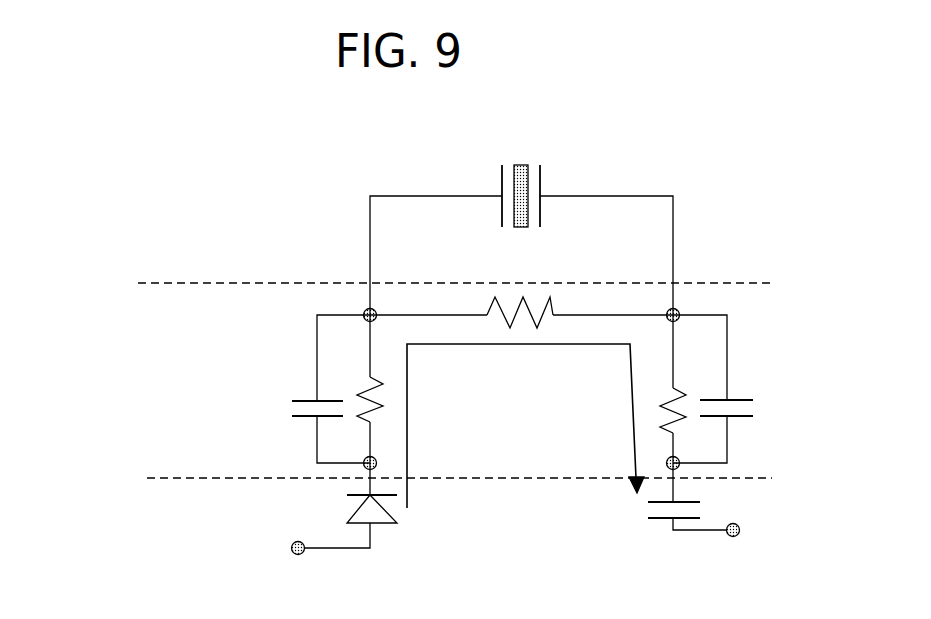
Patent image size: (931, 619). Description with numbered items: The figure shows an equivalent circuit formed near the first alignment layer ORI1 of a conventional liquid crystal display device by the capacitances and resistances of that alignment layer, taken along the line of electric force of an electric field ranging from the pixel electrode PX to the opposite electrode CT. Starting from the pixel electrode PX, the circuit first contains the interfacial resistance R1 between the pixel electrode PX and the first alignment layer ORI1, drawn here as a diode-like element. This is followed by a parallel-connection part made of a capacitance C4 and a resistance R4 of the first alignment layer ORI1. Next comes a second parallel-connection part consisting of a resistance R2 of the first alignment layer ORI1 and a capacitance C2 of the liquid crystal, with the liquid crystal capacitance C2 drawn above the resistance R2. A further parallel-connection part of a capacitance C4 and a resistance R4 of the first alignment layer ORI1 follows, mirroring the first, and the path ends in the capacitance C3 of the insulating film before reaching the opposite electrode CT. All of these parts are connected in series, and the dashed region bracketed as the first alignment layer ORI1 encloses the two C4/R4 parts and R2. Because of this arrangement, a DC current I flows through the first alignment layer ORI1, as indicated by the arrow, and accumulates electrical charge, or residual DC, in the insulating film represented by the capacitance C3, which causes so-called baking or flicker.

The first alignment layer ORI1 is at (115, 287).
The capacitance of the liquid crystal C2 is at (521, 224).
The resistance of the first alignment layer R2 is at (521, 306).
The resistance of the first alignment layer R4 is at (522, 389).
The capacitance of the first alignment layer C4 is at (525, 389).
The interfacial resistance R1 is at (351, 505).
The capacitance of the insulating film C3 is at (694, 496).
The pixel electrode PX is at (283, 549).
The opposite electrode CT is at (753, 531).
The DC current I is at (525, 426).